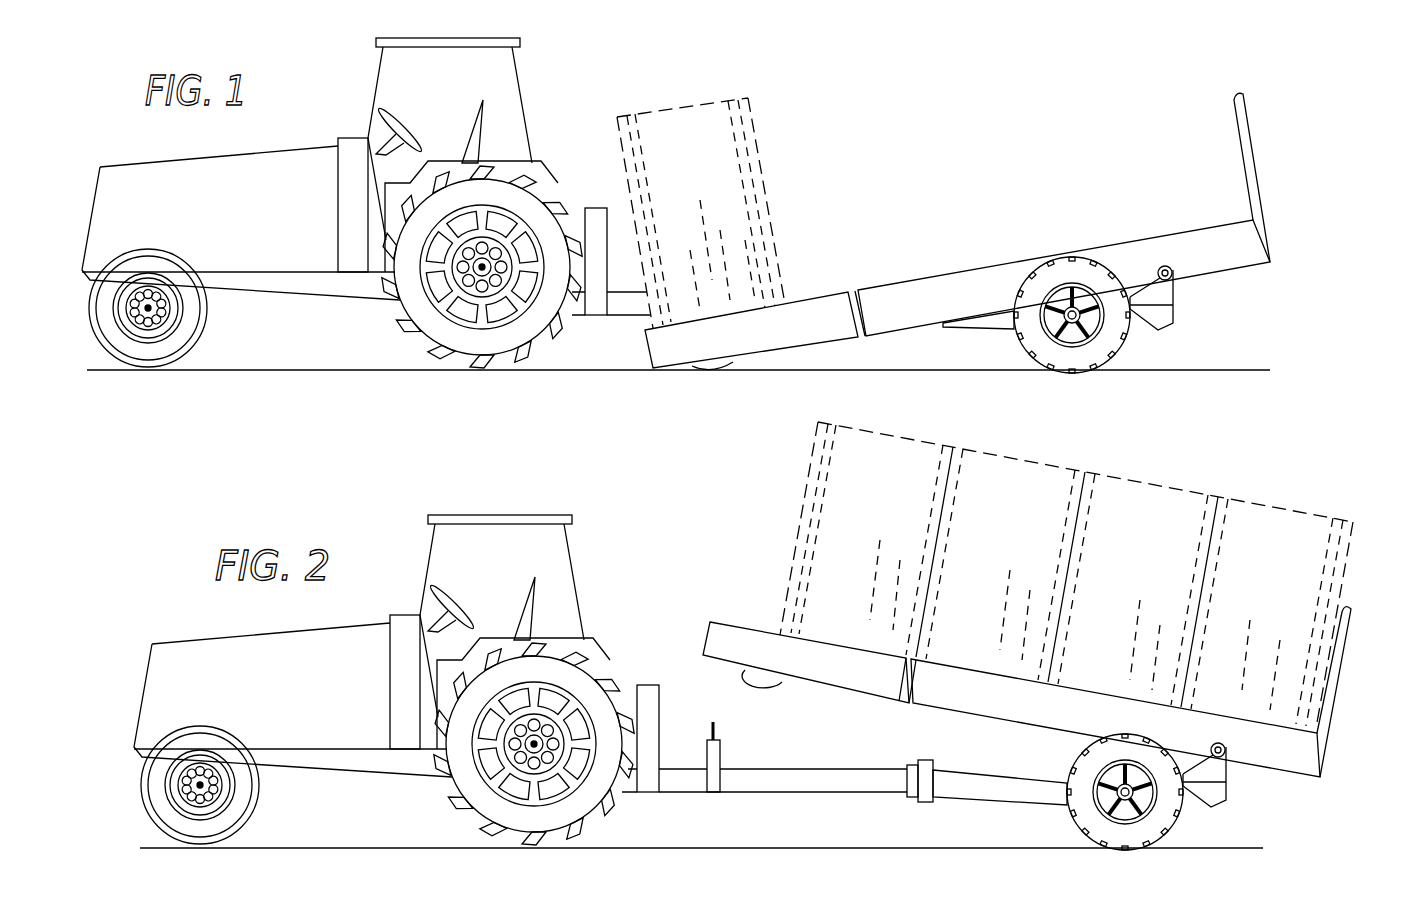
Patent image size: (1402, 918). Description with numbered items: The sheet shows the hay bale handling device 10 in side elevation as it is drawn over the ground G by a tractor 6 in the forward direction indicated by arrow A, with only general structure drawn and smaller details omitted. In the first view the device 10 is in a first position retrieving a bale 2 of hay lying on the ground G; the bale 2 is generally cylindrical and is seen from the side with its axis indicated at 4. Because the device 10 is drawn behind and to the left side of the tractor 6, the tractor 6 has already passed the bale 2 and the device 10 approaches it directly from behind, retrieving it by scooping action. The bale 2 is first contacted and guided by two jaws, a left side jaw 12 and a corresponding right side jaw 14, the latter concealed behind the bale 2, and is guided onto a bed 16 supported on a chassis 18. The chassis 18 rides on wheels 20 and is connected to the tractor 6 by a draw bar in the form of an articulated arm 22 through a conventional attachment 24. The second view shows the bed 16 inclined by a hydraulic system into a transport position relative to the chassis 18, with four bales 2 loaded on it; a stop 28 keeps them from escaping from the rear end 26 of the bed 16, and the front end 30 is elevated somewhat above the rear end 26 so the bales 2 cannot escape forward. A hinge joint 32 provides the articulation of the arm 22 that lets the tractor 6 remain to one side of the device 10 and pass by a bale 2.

In FIG. 1, the bale 2 is at (716, 163).
In FIG. 2, the bale 2 is at (875, 524).
In FIG. 1, the axis 4 is at (665, 193).
In FIG. 1, the tractor 6 is at (250, 226).
In FIG. 2, the tractor 6 is at (302, 705).
In FIG. 1, the hay bale handling device 10 is at (1083, 114).
In FIG. 1, the left side jaw 12 is at (773, 342).
In FIG. 2, the left side jaw 12 is at (865, 678).
In FIG. 1, the right side jaw 14 is at (618, 333).
In FIG. 1, the bed 16 is at (955, 218).
In FIG. 2, the bed 16 is at (1048, 722).
In FIG. 1, the chassis 18 is at (1168, 317).
In FIG. 2, the chassis 18 is at (1225, 795).
In FIG. 1, the wheels 20 is at (1042, 352).
In FIG. 2, the wheels 20 is at (1097, 828).
In FIG. 1, the articulated arm 22 is at (798, 297).
In FIG. 2, the articulated arm 22 is at (860, 782).
In FIG. 1, the attachment 24 is at (618, 271).
In FIG. 2, the rear end 26 is at (1303, 465).
In FIG. 1, the stop 28 is at (1242, 127).
In FIG. 2, the stop 28 is at (1328, 700).
In FIG. 2, the front end 30 is at (713, 552).
In FIG. 2, the hinge joint 32 is at (918, 814).
In FIG. 1, the arrow A is at (618, 70).
In FIG. 1, the ground G is at (1228, 370).
In FIG. 2, the ground G is at (1243, 848).